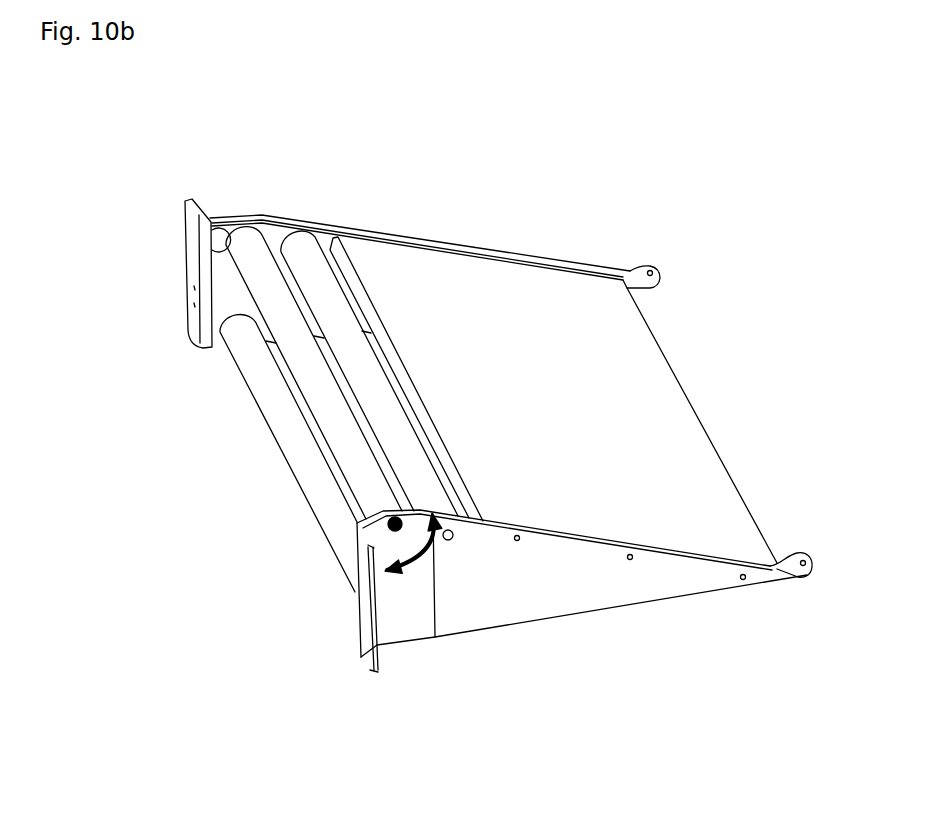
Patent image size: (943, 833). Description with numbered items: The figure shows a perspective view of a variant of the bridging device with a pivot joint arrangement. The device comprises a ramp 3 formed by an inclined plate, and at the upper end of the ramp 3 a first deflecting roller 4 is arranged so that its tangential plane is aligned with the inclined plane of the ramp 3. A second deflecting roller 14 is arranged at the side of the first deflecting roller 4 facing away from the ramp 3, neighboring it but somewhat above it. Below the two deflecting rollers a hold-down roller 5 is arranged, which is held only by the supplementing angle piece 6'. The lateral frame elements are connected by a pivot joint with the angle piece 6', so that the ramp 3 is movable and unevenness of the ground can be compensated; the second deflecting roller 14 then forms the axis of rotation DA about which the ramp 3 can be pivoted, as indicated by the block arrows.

The ramp 3 is at (489, 300).
The first deflecting roller 4 is at (327, 308).
The hold-down roller 5 is at (329, 522).
The angle piece 6' is at (394, 676).
The second deflecting roller 14 is at (322, 403).
The axis of rotation DA is at (393, 530).